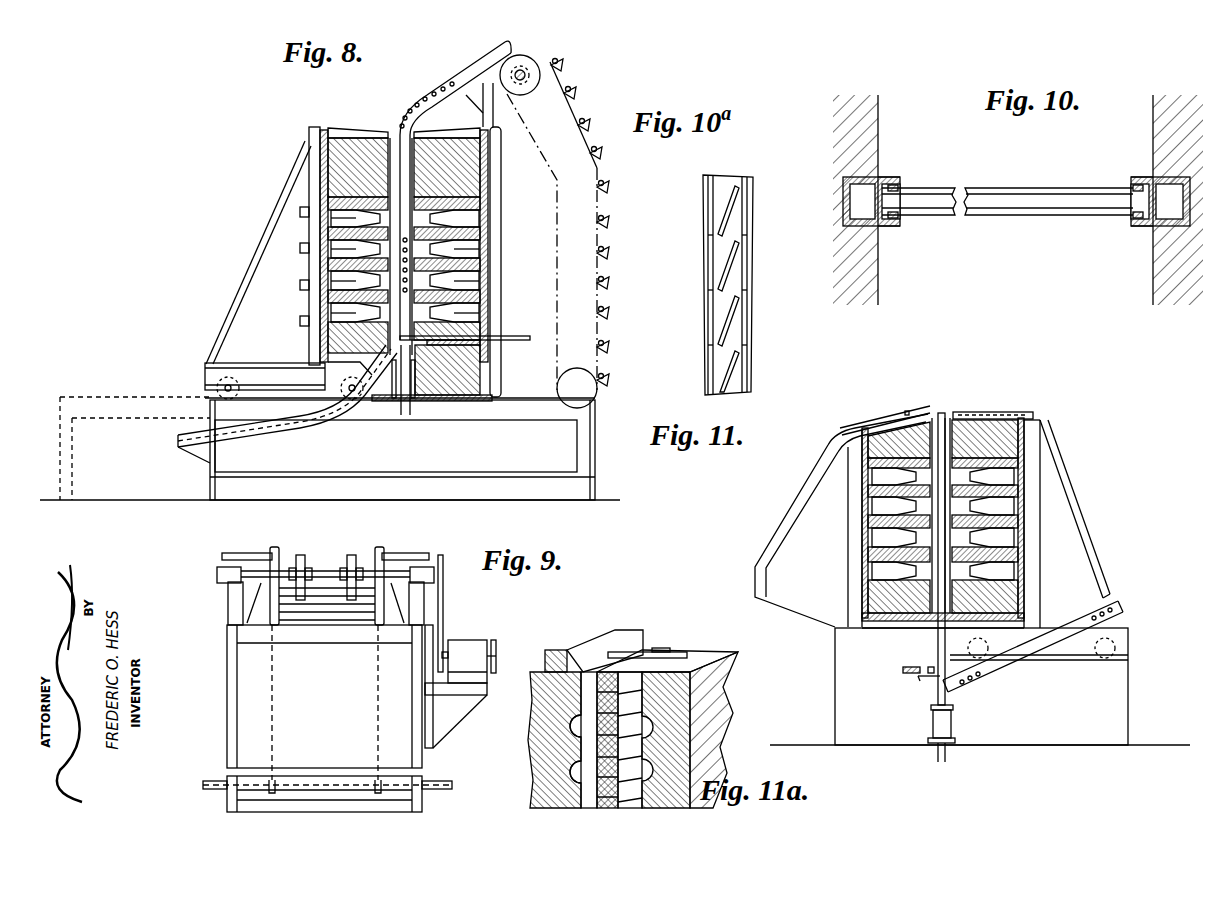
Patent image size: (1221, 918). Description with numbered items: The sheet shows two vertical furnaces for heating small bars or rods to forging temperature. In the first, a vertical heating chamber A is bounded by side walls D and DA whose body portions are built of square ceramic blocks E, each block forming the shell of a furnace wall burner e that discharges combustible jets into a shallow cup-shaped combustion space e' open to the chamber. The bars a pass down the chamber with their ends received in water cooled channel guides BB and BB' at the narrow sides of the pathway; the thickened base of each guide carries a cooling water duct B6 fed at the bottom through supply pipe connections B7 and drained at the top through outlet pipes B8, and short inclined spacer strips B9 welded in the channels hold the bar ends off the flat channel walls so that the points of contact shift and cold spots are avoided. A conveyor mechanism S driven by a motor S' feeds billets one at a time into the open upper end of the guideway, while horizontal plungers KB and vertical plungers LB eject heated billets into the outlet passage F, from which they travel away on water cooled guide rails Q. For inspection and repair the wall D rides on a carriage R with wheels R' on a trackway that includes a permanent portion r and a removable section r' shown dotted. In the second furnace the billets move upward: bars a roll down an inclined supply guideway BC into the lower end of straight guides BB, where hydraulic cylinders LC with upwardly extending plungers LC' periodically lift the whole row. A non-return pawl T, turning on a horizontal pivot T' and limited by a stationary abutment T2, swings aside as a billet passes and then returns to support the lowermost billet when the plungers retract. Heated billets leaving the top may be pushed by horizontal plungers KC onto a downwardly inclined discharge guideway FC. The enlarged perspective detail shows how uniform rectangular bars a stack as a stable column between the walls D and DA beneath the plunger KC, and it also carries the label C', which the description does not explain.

In FIG. 8, the side wall D is at (338, 159).
In FIG. 11, the side wall D is at (870, 430).
In FIG. 11A, the side wall D is at (548, 685).
In FIG. 8, the side wall DA is at (460, 170).
In FIG. 11, the side wall DA is at (1010, 437).
In FIG. 11A, the side wall DA is at (678, 735).
In FIG. 8, the water cooled guide BB is at (445, 190).
In FIG. 9, the water cooled guide BB is at (289, 568).
In FIG. 10A, the water cooled guide BB is at (755, 285).
In FIG. 10, the water cooled guide BB is at (908, 183).
In FIG. 11, the water cooled guide BB is at (950, 538).
In FIG. 9, the water cooled guide BB' is at (392, 568).
In FIG. 10, the water cooled guide BB' is at (1118, 182).
In FIG. 8, the furnace wall burner e is at (405, 217).
In FIG. 11, the furnace wall burner e is at (964, 512).
In FIG. 8, the combustion space e' is at (429, 247).
In FIG. 11, the combustion space e' is at (969, 554).
In FIG. 8, the bar a is at (440, 292).
In FIG. 9, the bar a is at (332, 608).
In FIG. 10, the bar a is at (985, 190).
In FIG. 11, the bar a is at (952, 681).
In FIG. 11A, the bar a is at (600, 738).
In FIG. 8, the conveyor mechanism S is at (554, 231).
In FIG. 9, the conveyor mechanism S is at (325, 562).
In FIG. 9, the driving motor S' is at (461, 651).
In FIG. 8, the horizontal plunger KB is at (505, 336).
In FIG. 8, the vertical plunger LB is at (407, 415).
In FIG. 8, the billet outlet passage F is at (380, 363).
In FIG. 8, the carriage R is at (265, 376).
In FIG. 8, the wheels R' is at (290, 369).
In FIG. 8, the trackway portion r is at (400, 409).
In FIG. 8, the removable trackway section r' is at (135, 426).
In FIG. 8, the water cooled guide rails Q is at (320, 428).
In FIG. 10, the cooling water duct B6 is at (860, 198).
In FIG. 9, the supply pipe connections B7 is at (212, 785).
In FIG. 9, the outlet pipes B8 is at (240, 553).
In FIG. 10A, the spacer projections B9 is at (724, 282).
In FIG. 10, the spacer projections B9 is at (898, 218).
In FIG. 11, the discharge guideway FC is at (880, 417).
In FIG. 11, the heating chamber A is at (957, 455).
In FIG. 11, the horizontally movable plungers KC is at (1005, 412).
In FIG. 11A, the horizontally movable plungers KC is at (660, 652).
In FIG. 11, the ceramic blocks E is at (1025, 461).
In FIG. 11, the billet supply guideway BC is at (1073, 626).
In FIG. 11, the non-return pawl T is at (918, 696).
In FIG. 11, the pivot T' is at (927, 651).
In FIG. 11, the stationary abutment T2 is at (908, 667).
In FIG. 11, the hydraulic cylinders LC is at (966, 735).
In FIG. 11, the plungers LC' is at (974, 697).
In FIG. 11A, the cavity C' is at (545, 744).